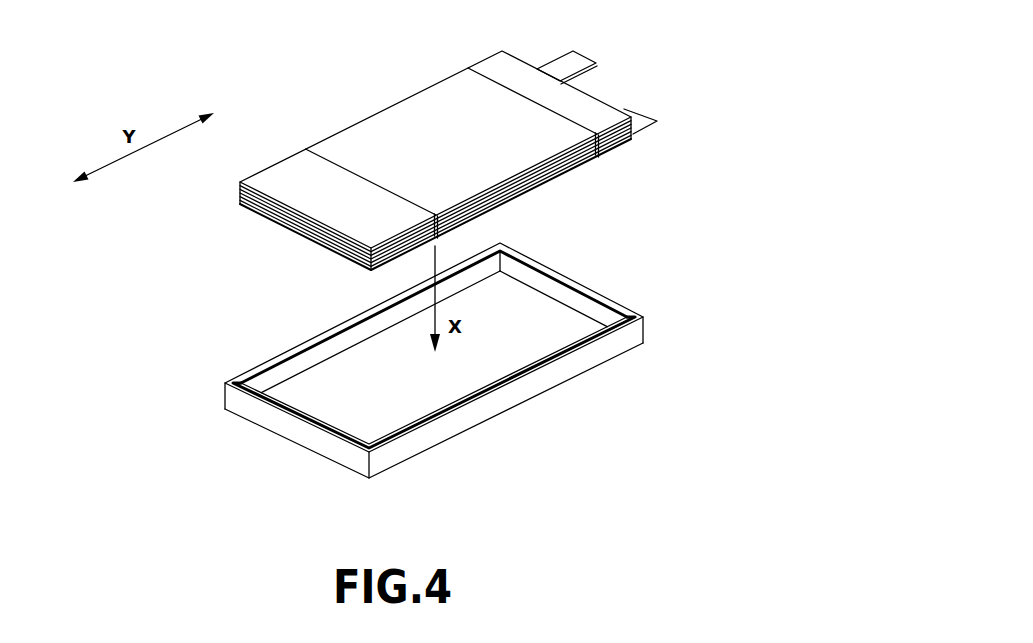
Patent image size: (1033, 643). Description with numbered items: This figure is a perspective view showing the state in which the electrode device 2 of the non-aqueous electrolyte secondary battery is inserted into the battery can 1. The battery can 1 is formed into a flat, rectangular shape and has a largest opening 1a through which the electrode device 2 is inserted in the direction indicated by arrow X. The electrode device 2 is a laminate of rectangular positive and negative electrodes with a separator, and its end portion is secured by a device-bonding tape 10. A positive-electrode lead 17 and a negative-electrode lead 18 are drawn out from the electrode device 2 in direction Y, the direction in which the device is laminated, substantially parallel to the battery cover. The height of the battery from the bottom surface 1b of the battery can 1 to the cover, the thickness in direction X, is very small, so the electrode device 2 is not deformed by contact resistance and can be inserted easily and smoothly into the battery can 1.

The battery can 1 is at (517, 393).
The largest opening 1a is at (380, 356).
The bottom surface 1b is at (318, 382).
The electrode device 2 is at (345, 85).
The device-bonding tape 10 is at (425, 115).
The positive-electrode lead 17 is at (578, 63).
The negative-electrode lead 18 is at (637, 122).